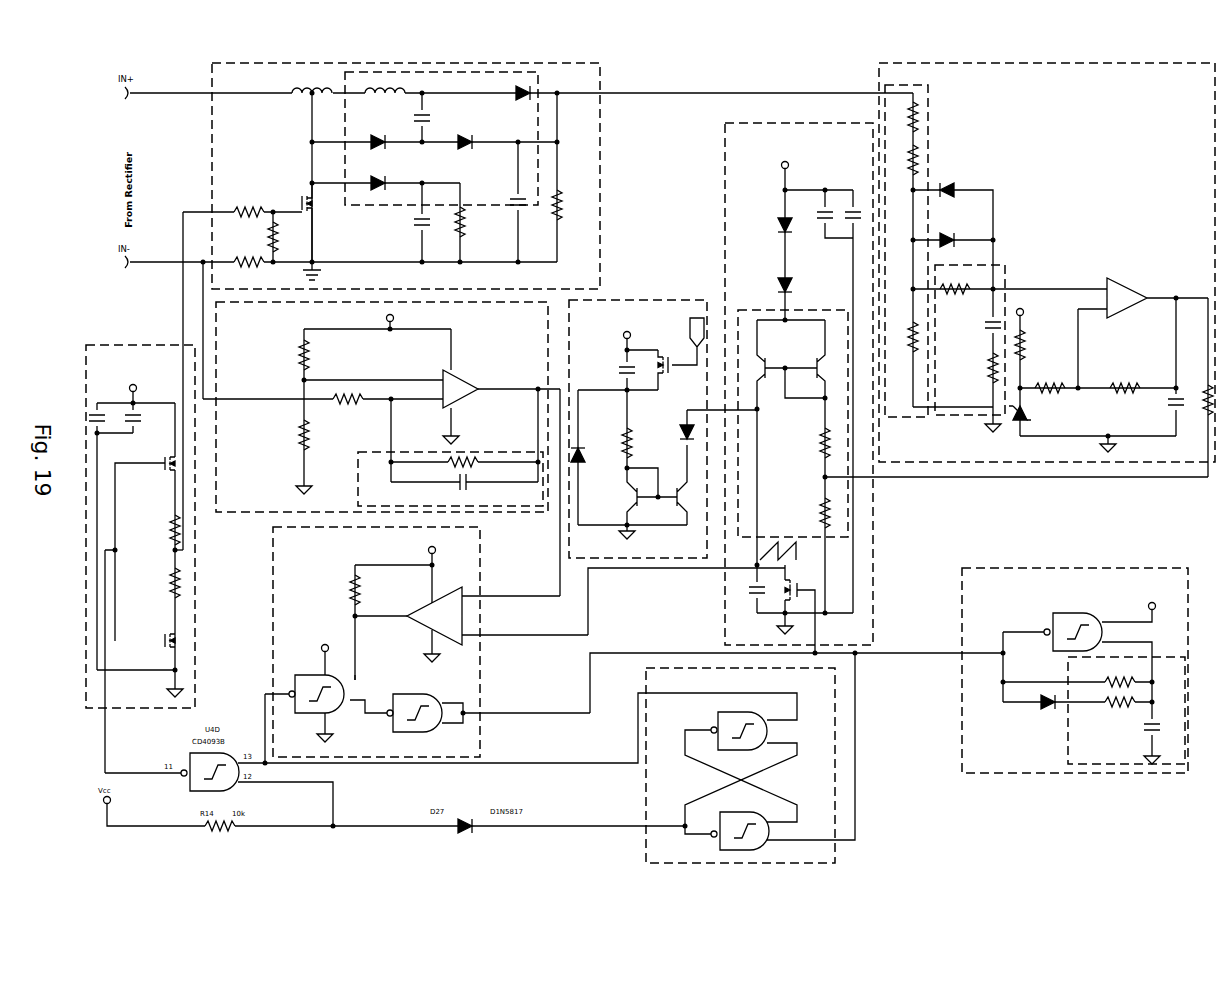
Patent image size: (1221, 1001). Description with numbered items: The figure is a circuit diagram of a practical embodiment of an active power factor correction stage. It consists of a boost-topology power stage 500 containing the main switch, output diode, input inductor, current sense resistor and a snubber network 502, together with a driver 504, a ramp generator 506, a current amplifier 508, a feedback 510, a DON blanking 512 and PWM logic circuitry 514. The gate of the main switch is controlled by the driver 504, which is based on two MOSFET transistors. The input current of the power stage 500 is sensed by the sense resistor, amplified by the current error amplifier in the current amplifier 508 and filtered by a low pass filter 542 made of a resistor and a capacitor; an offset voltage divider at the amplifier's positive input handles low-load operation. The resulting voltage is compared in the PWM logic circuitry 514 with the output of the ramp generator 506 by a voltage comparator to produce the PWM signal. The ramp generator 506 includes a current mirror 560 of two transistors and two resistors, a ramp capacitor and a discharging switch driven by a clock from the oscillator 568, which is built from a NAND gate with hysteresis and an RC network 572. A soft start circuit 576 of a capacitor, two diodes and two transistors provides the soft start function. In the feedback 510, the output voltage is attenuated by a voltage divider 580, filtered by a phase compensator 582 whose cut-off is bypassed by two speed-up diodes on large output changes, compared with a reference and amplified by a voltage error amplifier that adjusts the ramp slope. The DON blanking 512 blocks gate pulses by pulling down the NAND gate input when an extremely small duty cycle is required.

The power stage 500 is at (521, 176).
The snubber / output filter network 502 is at (538, 155).
The driver 504 is at (195, 620).
The ramp generator 506 is at (870, 388).
The current amplifier 508 is at (381, 445).
The feedback 510 is at (1047, 309).
The DON blanking 512 is at (862, 715).
The PWM logic circuitry 514 is at (480, 700).
The low pass filter 542 is at (510, 512).
The current mirror 560 is at (848, 481).
The oscillator 568 is at (1050, 699).
The RC network 572 is at (1095, 773).
The soft start circuit 576 is at (645, 300).
The voltage divider 580 is at (925, 110).
The phase compensator 582 is at (1035, 270).